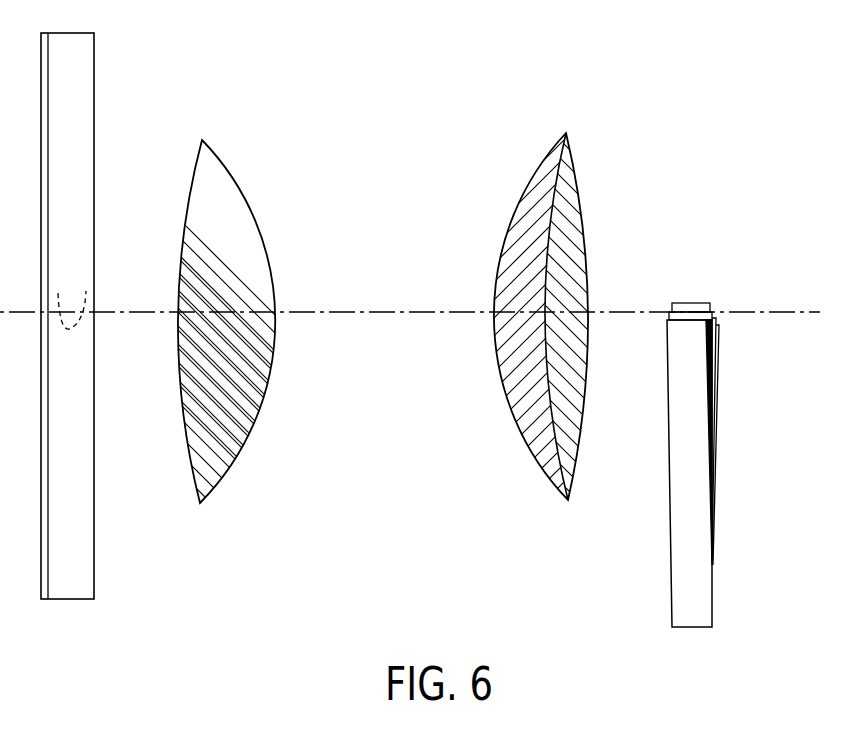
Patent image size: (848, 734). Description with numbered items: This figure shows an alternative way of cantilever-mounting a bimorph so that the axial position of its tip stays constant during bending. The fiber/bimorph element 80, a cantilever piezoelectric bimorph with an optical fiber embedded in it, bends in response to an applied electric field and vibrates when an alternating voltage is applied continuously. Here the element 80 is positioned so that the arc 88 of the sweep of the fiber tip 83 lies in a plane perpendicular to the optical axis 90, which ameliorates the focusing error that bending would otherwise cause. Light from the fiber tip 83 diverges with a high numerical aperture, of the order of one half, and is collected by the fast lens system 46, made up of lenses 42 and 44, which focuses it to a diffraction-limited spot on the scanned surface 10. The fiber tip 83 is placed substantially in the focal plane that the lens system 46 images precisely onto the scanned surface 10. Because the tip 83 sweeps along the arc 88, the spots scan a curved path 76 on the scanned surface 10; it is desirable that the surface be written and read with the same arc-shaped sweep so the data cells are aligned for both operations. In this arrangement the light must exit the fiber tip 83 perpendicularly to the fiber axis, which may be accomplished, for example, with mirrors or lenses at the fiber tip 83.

The scanned surface 10 is at (94, 97).
The curved path 76 is at (86, 292).
The lens 42 is at (250, 374).
The lens 44 is at (538, 385).
The lens system 46 is at (370, 367).
The optical axis 90 is at (361, 311).
The fiber/bimorph element 80 is at (732, 468).
The fiber tip 83 is at (659, 334).
The arc 88 is at (729, 348).